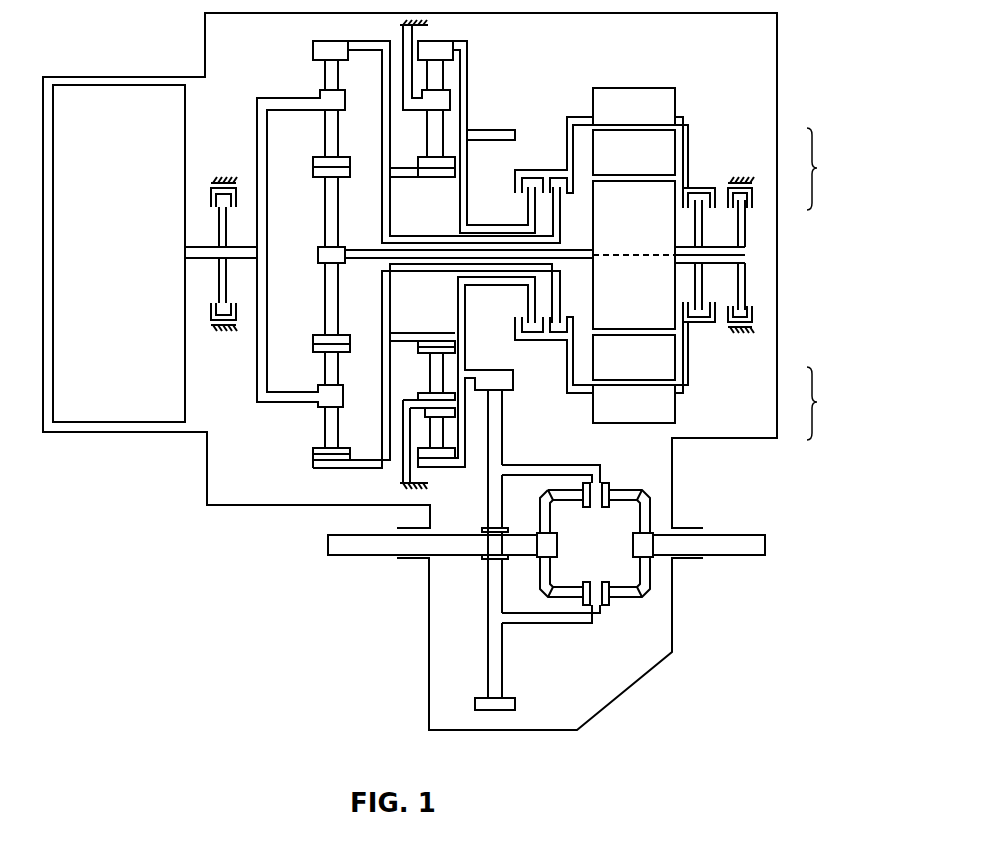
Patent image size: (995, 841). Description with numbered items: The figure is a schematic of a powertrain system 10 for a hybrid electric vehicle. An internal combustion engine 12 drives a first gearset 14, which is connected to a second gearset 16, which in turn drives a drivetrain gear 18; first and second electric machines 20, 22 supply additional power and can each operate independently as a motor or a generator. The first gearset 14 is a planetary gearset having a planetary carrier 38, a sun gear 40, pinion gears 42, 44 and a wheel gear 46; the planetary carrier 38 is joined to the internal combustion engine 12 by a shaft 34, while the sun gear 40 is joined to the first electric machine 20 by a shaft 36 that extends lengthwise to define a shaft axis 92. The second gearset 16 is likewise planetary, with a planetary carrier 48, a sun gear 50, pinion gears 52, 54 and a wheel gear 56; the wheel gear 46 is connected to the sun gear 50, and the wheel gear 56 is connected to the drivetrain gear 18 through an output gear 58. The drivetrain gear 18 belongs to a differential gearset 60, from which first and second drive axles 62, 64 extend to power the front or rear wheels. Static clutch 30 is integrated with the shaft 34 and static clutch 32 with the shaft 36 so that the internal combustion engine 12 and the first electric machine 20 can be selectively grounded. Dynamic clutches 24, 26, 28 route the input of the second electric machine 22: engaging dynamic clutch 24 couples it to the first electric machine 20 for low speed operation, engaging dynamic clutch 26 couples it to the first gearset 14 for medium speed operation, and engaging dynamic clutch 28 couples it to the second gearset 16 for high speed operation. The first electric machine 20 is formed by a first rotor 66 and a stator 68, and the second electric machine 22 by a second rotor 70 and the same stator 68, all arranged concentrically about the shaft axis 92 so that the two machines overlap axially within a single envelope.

The powertrain system 10 is at (193, 681).
The internal combustion engine 12 is at (130, 405).
The first gearset 14 is at (323, 37).
The second gearset 16 is at (447, 36).
The drivetrain gear 18 is at (484, 696).
The first electric machine 20 is at (835, 169).
The second electric machine 22 is at (835, 403).
The dynamic clutch 24 is at (702, 326).
The dynamic clutch 26 is at (553, 170).
The dynamic clutch 28 is at (530, 170).
The static clutch 30 is at (213, 172).
The static clutch 32 is at (748, 340).
The shaft 34 is at (200, 260).
The shaft 36 is at (356, 260).
The planetary carrier 38 is at (282, 95).
The sun gear 40 is at (321, 332).
The pinion gear 42 is at (318, 157).
The pinion gear 44 is at (320, 447).
The wheel gear 46 is at (363, 459).
The planetary carrier 48 is at (402, 56).
The sun gear 50 is at (436, 333).
The pinion gear 52 is at (428, 157).
The pinion gear 54 is at (428, 395).
The wheel gear 56 is at (440, 477).
The output gear 58 is at (494, 130).
The differential gearset 60 is at (594, 632).
The first drive axle 62 is at (345, 549).
The second drive axle 64 is at (745, 549).
The first rotor 66 is at (657, 232).
The stator 68 is at (663, 150).
The second rotor 70 is at (663, 107).
The shaft axis 92 is at (640, 258).